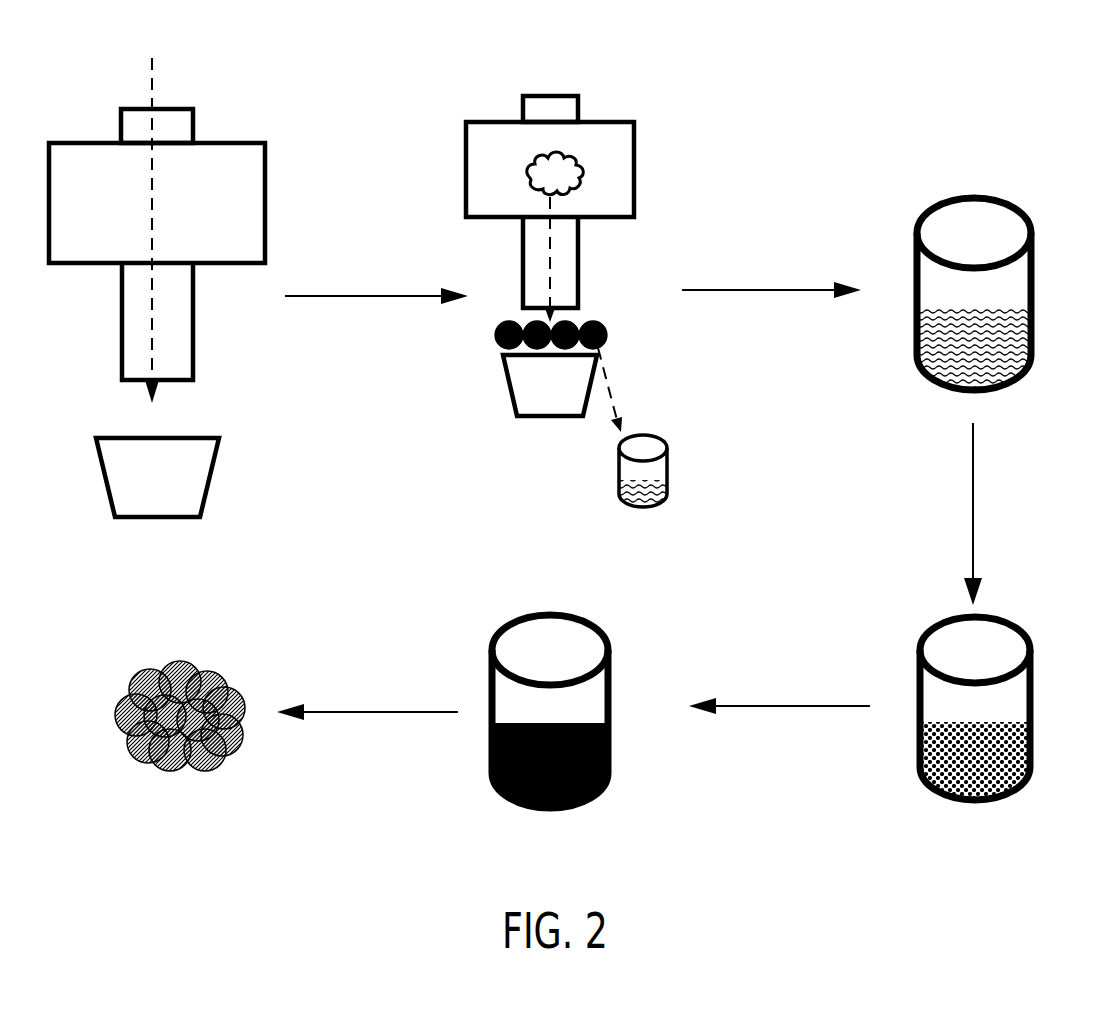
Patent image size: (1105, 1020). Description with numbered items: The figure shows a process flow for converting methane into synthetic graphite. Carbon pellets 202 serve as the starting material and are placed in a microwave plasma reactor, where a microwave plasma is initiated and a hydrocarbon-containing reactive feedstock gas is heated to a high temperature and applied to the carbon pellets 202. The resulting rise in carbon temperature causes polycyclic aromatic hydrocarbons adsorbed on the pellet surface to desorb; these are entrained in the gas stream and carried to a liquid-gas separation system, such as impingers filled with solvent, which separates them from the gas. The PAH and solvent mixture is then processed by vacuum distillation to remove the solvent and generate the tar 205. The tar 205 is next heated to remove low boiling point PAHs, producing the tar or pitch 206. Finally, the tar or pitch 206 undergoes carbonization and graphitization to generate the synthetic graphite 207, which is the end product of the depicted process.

The carbon pellets 202 is at (606, 333).
The tar 205 is at (1031, 757).
The tar or pitch 206 is at (609, 775).
The synthetic graphite 207 is at (228, 682).